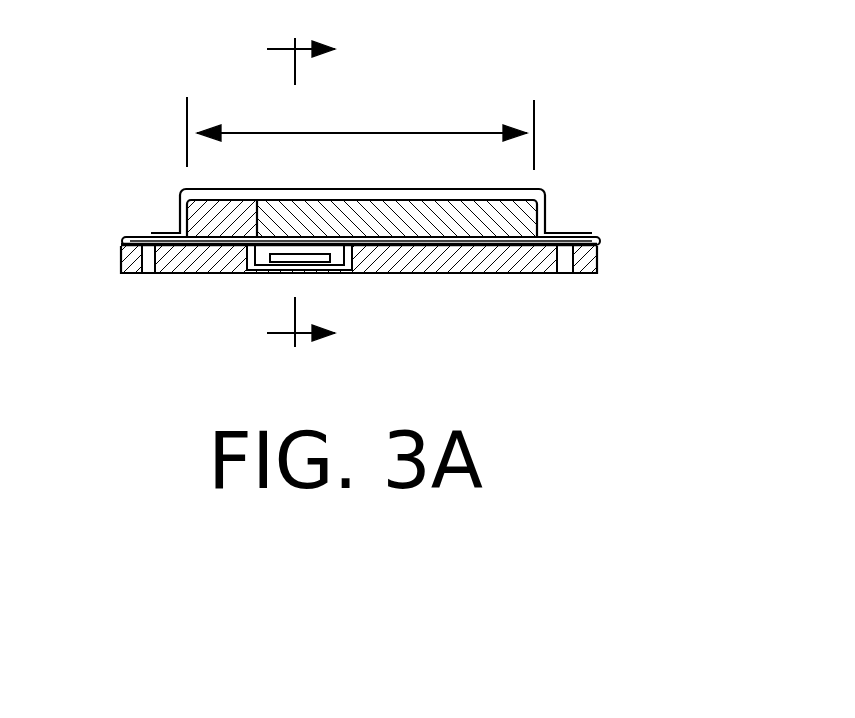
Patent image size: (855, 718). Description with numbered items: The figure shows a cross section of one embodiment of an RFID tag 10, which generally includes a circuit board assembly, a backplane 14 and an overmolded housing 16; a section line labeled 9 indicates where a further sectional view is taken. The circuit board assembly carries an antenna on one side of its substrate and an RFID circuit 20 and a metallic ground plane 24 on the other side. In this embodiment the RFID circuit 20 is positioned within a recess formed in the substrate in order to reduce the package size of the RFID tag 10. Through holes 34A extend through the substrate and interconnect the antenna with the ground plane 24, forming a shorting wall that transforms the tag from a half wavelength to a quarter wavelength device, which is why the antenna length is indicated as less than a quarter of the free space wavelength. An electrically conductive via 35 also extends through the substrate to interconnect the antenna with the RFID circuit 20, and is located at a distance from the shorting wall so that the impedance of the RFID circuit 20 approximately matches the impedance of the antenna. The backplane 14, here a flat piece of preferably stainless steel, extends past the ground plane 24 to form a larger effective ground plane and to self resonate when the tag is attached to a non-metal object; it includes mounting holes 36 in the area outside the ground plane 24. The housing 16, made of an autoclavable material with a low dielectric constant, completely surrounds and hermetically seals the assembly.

The RFID tag 10 is at (361, 204).
The section line 9- 9 is at (290, 192).
The backplane 14 is at (174, 290).
The overmolded housing 16 is at (170, 175).
The RFID circuit 20 is at (318, 262).
The metallic ground plane 24 is at (460, 247).
The through holes 34A is at (207, 222).
The electrically conductive via 35 is at (248, 213).
The mounting holes 36 is at (568, 240).